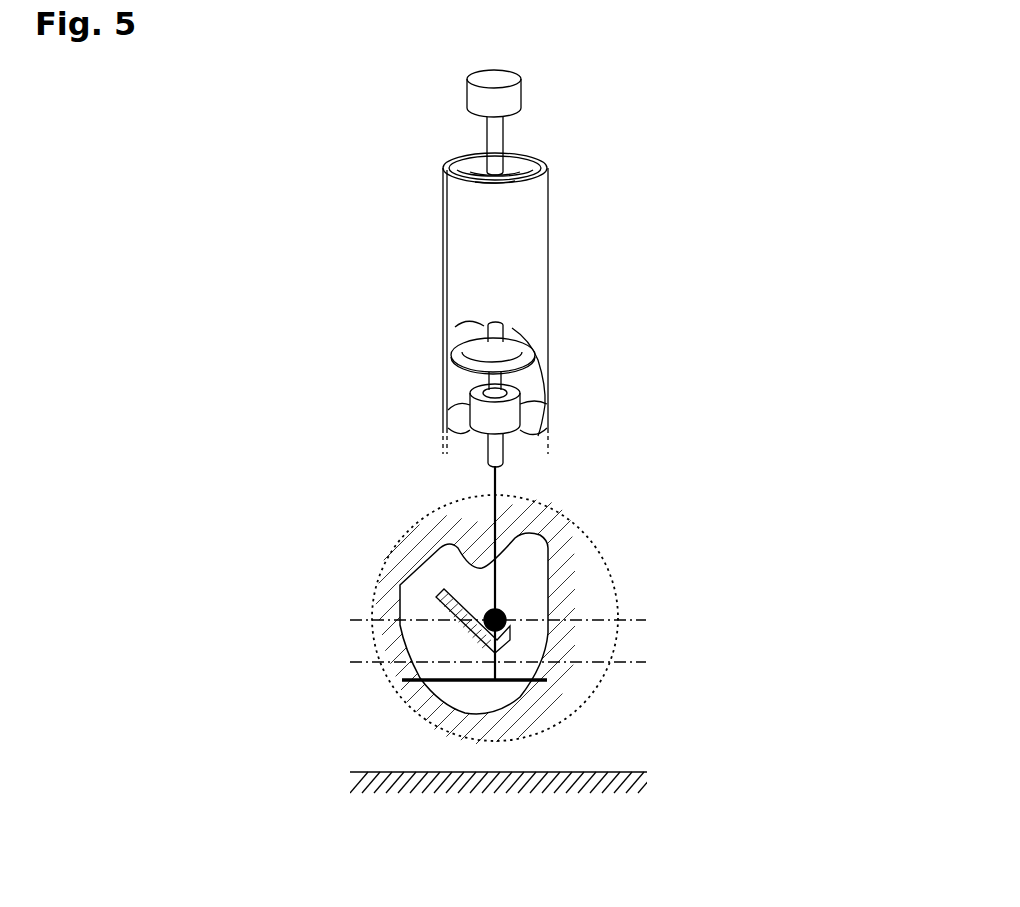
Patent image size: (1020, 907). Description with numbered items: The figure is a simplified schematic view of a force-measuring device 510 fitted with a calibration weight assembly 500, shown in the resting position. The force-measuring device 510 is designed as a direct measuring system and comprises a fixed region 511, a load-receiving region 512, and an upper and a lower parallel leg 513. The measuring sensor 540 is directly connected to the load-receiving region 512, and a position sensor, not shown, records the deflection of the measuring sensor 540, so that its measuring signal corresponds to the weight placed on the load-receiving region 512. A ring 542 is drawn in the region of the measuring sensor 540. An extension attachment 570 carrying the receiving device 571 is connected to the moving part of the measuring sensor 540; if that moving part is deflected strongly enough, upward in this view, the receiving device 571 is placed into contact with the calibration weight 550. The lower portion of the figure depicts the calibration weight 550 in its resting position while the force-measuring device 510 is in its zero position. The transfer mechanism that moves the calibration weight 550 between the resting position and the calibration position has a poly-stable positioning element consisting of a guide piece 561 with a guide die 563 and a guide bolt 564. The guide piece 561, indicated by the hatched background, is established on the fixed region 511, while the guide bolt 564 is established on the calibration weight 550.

The calibration weight assembly 500 is at (670, 484).
The force-measuring device 510 is at (375, 180).
The fixed region 511 is at (528, 214).
The load-receiving region 512 is at (503, 143).
The parallel leg 513 is at (482, 170).
The measuring sensor 540 is at (558, 407).
The ring 542 is at (456, 417).
The calibration weight 550 is at (432, 512).
The guide piece 561 is at (527, 698).
The guide die 563 is at (445, 646).
The guide bolt 564 is at (485, 607).
The extension attachment 570 is at (536, 502).
The receiving device 571 is at (462, 684).